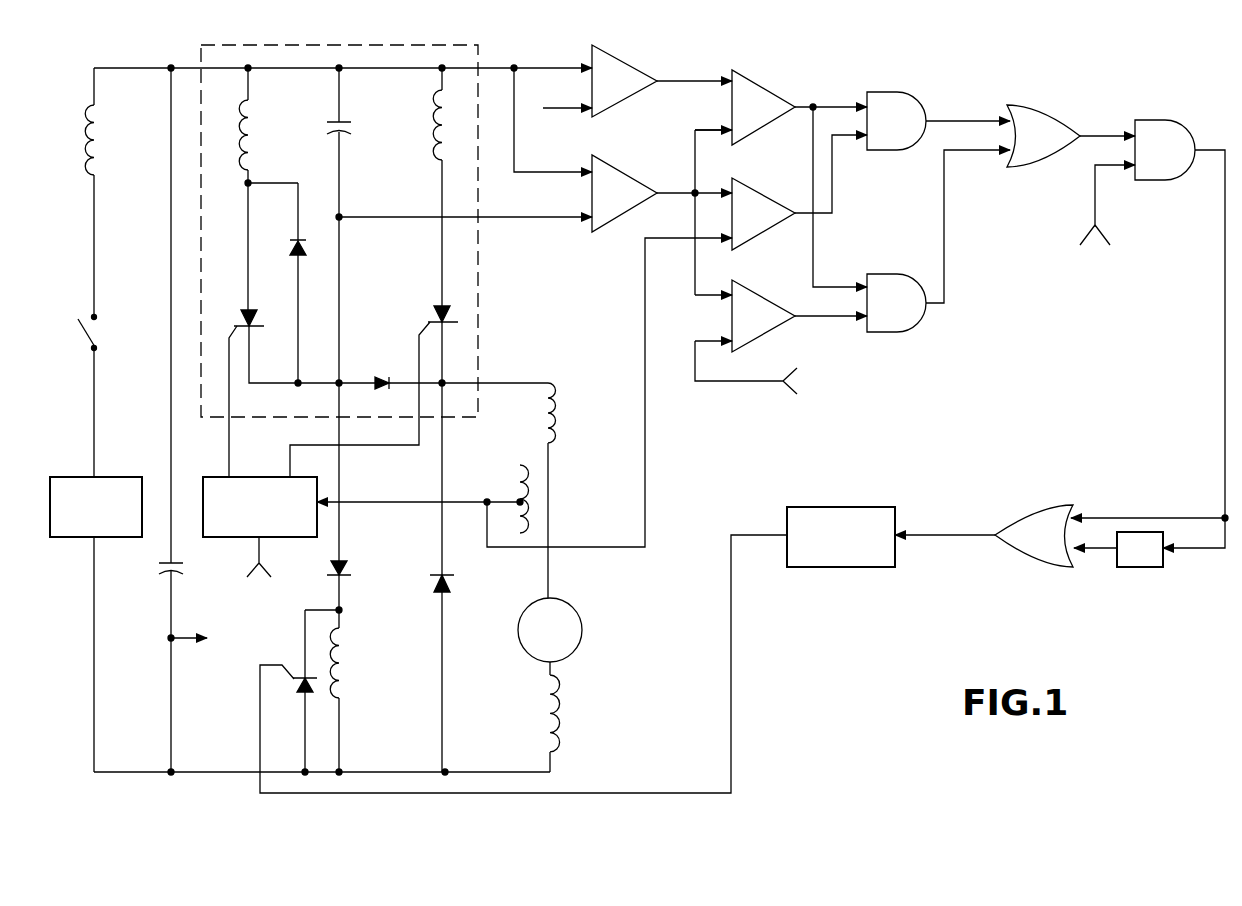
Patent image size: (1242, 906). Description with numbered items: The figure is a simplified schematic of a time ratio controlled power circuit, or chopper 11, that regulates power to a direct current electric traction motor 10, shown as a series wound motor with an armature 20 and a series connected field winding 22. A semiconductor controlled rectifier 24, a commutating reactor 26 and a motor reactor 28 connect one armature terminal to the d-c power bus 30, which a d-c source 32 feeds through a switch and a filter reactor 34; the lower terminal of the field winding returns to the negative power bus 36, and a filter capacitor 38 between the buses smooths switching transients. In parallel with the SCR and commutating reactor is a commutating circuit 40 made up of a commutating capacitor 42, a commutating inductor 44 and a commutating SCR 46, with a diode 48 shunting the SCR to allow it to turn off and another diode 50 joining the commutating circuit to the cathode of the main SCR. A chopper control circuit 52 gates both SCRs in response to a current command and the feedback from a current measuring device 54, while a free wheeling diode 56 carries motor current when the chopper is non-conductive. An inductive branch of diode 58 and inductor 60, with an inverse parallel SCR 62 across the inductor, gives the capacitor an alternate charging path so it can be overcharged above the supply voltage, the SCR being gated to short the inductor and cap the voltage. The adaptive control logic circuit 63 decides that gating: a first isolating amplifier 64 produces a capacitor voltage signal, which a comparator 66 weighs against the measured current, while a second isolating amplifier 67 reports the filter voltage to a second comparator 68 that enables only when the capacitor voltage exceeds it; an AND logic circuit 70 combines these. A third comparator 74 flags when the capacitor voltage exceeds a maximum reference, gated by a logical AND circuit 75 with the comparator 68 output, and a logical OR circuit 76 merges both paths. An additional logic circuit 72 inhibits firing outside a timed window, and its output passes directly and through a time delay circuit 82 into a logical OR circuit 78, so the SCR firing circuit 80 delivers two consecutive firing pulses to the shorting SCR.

The direct current electric traction motor 10 is at (570, 674).
The chopper 11 is at (482, 51).
The armature 20 is at (574, 609).
The field winding 22 is at (565, 740).
The semiconductor controlled rectifier 24 is at (428, 318).
The commutating reactor 26 is at (432, 100).
The motor reactor 28 is at (560, 410).
The d-c power bus 30 is at (171, 68).
The d-c source 32 is at (116, 476).
The filter reactor 34 is at (102, 130).
The negative power bus 36 is at (94, 760).
The filter capacitor 38 is at (159, 567).
The commutating circuit 40 is at (302, 104).
The commutating capacitor 42 is at (344, 129).
The commutating inductor 44 is at (251, 122).
The commutating SCR 46 is at (252, 330).
The diode 48 is at (288, 247).
The diode 50 is at (381, 377).
The chopper control circuit 52 is at (260, 476).
The current measuring device 54 is at (512, 469).
The free wheeling diode 56 is at (450, 584).
The diode 58 is at (350, 574).
The inductor 60 is at (349, 674).
The SCR 62 is at (290, 691).
The adaptive control logic circuit 63 is at (851, 62).
The first isolating amplifier 64 is at (640, 174).
The comparator 66 is at (775, 192).
The second isolating amplifier 67 is at (643, 73).
The second comparator 68 is at (773, 89).
The AND logic circuit 70 is at (908, 93).
The logic circuit 72 is at (1179, 120).
The third comparator 74 is at (775, 296).
The logical AND circuit 75 is at (902, 282).
The logical OR circuit 76 is at (1052, 107).
The logical OR circuit 78 is at (1053, 505).
The SCR firing circuit 80 is at (860, 507).
The time delay circuit 82 is at (1134, 569).